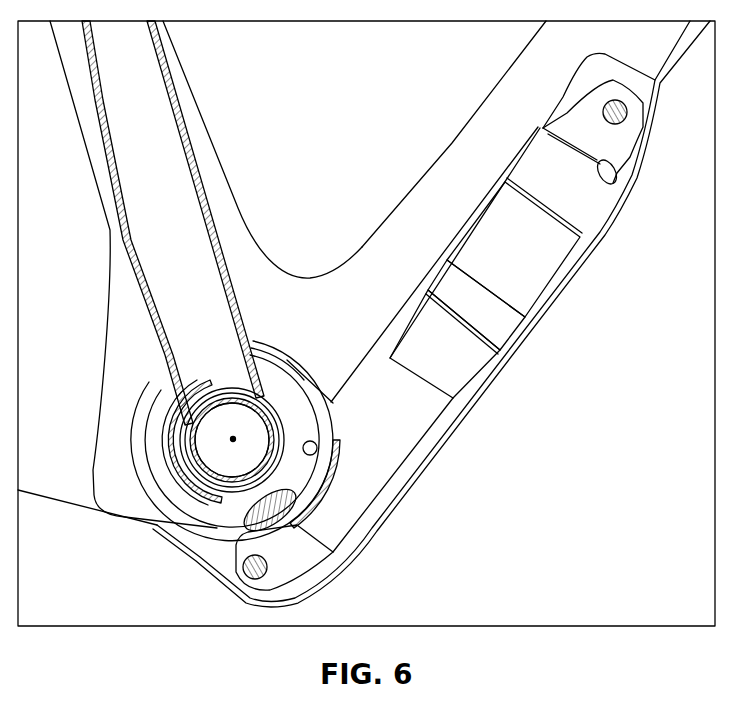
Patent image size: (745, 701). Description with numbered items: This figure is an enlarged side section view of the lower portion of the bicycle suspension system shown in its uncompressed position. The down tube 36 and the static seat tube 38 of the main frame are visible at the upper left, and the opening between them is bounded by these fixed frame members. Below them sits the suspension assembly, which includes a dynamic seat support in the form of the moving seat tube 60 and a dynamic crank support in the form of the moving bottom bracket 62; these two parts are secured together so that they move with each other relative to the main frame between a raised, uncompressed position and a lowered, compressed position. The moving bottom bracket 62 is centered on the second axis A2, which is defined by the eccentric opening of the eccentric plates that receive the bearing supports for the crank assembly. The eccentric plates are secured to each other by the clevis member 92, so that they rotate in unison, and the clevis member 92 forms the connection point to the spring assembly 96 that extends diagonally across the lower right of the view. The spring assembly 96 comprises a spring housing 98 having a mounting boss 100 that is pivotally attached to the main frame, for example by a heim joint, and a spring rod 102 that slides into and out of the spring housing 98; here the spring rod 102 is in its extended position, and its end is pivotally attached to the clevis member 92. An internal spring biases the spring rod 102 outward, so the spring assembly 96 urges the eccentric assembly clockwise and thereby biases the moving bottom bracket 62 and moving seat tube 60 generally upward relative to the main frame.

The down tube 36 is at (470, 142).
The static seat tube 38 is at (228, 197).
The moving seat tube 60 is at (170, 227).
The moving bottom bracket 62 is at (236, 390).
The second axis A2 is at (236, 437).
The clevis member 92 is at (240, 546).
The spring assembly 96 is at (513, 398).
The spring housing 98 is at (525, 258).
The mounting boss 100 is at (592, 123).
The spring rod 102 is at (375, 465).